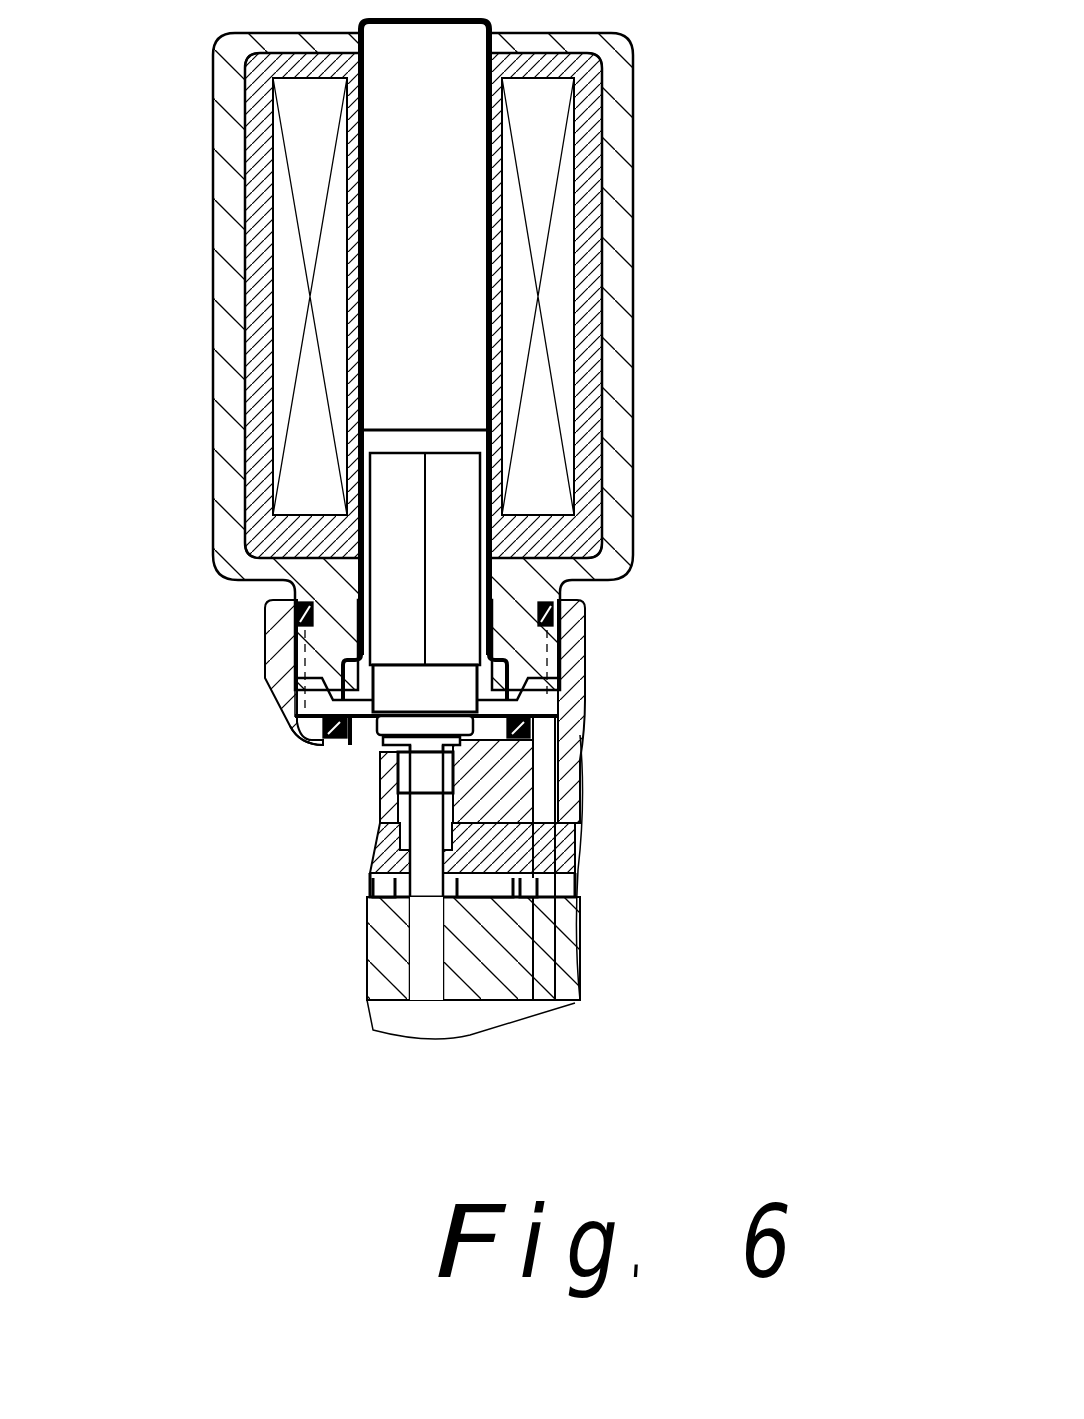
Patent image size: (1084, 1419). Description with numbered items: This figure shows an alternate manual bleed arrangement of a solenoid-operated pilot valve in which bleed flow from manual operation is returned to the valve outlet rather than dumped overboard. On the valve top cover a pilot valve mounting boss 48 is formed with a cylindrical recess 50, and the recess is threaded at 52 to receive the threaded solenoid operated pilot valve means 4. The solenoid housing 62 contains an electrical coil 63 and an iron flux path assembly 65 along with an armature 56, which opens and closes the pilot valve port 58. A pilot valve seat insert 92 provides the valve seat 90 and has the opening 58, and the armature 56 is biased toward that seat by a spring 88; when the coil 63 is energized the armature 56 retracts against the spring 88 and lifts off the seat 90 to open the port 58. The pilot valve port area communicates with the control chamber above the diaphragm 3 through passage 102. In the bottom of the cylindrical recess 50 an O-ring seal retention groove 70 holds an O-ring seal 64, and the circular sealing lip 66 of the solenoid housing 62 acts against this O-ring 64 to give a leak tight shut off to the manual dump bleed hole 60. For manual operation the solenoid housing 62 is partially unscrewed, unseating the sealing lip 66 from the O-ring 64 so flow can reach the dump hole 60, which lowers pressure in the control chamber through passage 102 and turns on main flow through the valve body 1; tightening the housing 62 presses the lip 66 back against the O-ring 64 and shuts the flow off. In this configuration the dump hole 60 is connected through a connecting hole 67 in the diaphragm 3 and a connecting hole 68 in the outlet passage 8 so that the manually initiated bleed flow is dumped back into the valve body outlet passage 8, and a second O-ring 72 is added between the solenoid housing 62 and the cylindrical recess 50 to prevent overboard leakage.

The valve body 1 is at (345, 954).
The diaphragm 3 is at (350, 876).
The solenoid operated pilot valve means 4 is at (650, 340).
The valve body outlet passage 8 is at (530, 1008).
The pilot valve mounting boss 48 is at (600, 692).
The cylindrical recess 50 is at (548, 650).
The threads 52 is at (535, 690).
The armature 56 is at (425, 537).
The pilot valve port 58 is at (390, 790).
The manual dump bleed hole 60 is at (548, 790).
The solenoid housing 62 is at (635, 142).
The electrical coil 63 is at (540, 232).
The O-ring seal 64 is at (532, 728).
The iron flux path assembly 65 is at (585, 370).
The circular sealing lip 66 is at (548, 708).
The connecting hole 67 is at (548, 850).
The connecting hole 68 is at (547, 945).
The O-ring seal retention groove 70 is at (317, 745).
The second O-ring 72 is at (553, 615).
The spring 88 is at (367, 687).
The valve seat 90 is at (425, 688).
The pilot valve seat insert 92 is at (380, 742).
The passage 102 is at (362, 730).